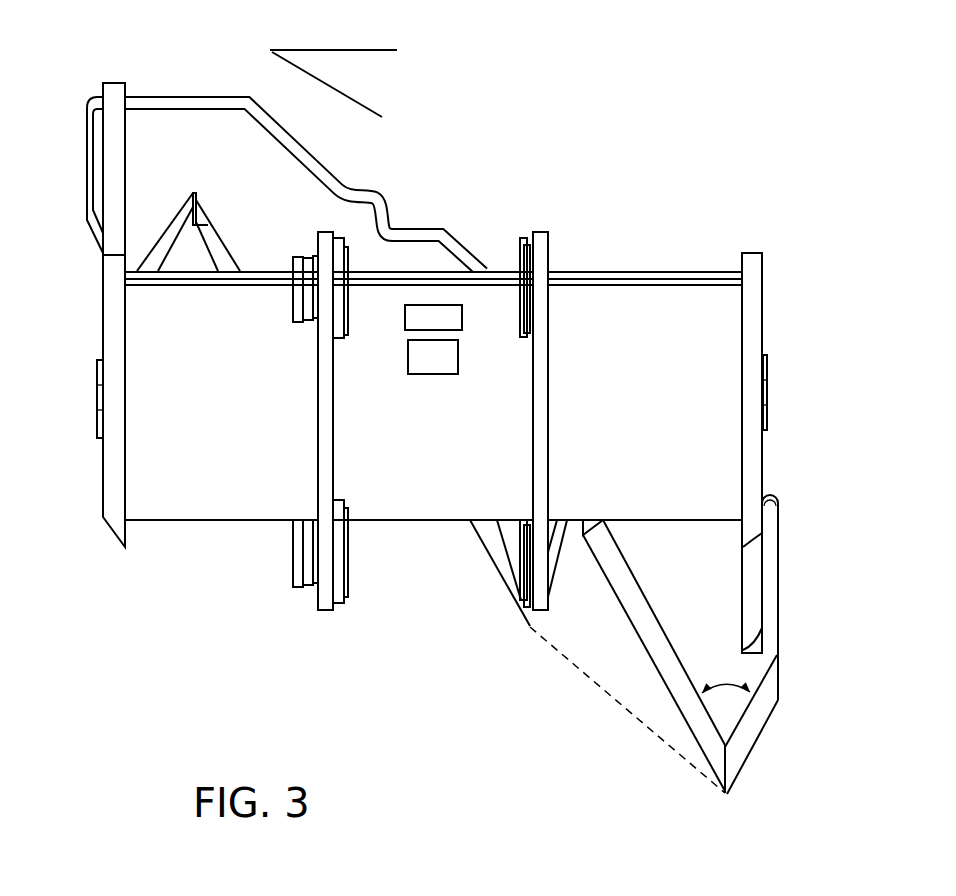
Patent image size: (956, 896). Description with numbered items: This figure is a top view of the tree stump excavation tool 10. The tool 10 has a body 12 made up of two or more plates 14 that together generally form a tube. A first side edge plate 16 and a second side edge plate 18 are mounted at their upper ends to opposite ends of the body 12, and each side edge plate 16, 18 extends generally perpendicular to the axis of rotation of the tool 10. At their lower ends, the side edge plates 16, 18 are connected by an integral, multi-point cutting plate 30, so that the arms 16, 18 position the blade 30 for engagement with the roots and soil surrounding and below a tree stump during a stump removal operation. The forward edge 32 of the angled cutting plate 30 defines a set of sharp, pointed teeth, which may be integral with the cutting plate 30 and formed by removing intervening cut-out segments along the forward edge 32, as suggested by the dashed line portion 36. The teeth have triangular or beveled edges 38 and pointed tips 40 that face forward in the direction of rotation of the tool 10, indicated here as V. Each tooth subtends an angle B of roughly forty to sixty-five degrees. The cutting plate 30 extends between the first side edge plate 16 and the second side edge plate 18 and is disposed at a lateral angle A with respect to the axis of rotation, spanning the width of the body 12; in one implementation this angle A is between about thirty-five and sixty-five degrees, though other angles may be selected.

The tree stump excavation tool 10 is at (433, 440).
The body 12 is at (645, 305).
The plates 14 is at (648, 393).
The first side edge plate 16 is at (115, 467).
The second side edge plate 18 is at (752, 460).
The integral cutting plate 30 is at (282, 192).
The forward edge 32 is at (746, 740).
The dashed line portion 36 is at (657, 710).
The beveled edges 38 is at (497, 550).
The pointed tips 40 is at (725, 797).
The lateral angle A is at (310, 15).
The tooth angle B is at (727, 688).
The direction V is at (593, 650).